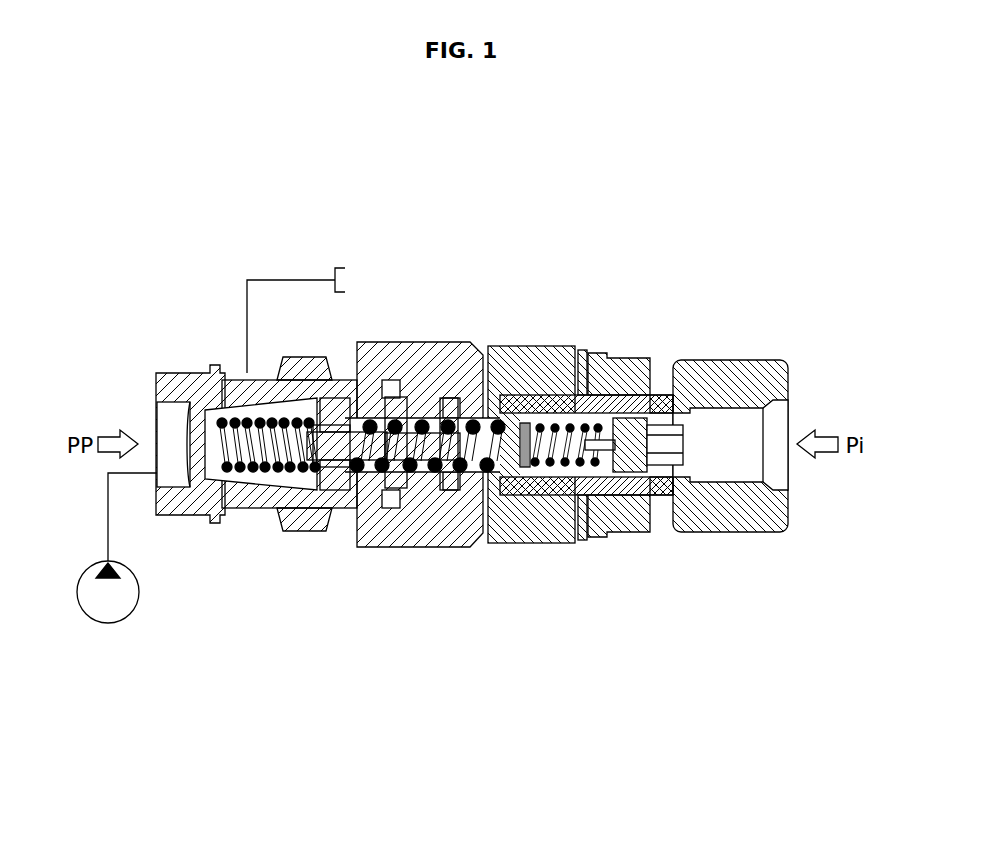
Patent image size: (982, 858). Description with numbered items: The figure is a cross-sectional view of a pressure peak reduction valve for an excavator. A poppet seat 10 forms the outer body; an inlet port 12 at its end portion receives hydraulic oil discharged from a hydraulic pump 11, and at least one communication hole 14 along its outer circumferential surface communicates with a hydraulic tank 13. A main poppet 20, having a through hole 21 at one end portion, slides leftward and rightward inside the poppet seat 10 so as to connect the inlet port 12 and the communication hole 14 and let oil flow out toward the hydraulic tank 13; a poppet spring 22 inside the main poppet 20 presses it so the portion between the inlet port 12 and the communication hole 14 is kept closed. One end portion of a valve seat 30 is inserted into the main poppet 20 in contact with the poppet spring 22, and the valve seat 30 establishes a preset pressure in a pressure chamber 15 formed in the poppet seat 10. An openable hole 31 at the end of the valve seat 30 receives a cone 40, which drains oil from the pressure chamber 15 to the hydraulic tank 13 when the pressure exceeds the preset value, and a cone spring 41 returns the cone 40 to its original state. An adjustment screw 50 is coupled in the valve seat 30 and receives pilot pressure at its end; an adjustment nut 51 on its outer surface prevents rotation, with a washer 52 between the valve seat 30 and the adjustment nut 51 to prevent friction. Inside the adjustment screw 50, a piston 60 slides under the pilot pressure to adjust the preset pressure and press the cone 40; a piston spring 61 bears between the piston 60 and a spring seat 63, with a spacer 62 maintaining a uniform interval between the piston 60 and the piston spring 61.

The poppet seat 10 is at (383, 348).
The hydraulic pump 11 is at (120, 622).
The inlet port 12 is at (158, 400).
The hydraulic tank 13 is at (343, 267).
The communication hole 14 is at (255, 378).
The pressure chamber 15 is at (290, 410).
The main poppet 20 is at (312, 508).
The through hole 21 is at (200, 440).
The poppet spring 22 is at (290, 498).
The valve seat 30 is at (522, 347).
The openable hole 31 is at (341, 508).
The cone 40 is at (378, 455).
The cone spring 41 is at (456, 472).
The adjustment screw 50 is at (713, 362).
The adjustment nut 51 is at (625, 357).
The washer 52 is at (583, 352).
The piston 60 is at (562, 470).
The piston spring 61 is at (596, 465).
The spacer 62 is at (523, 470).
The spring seat 63 is at (642, 475).